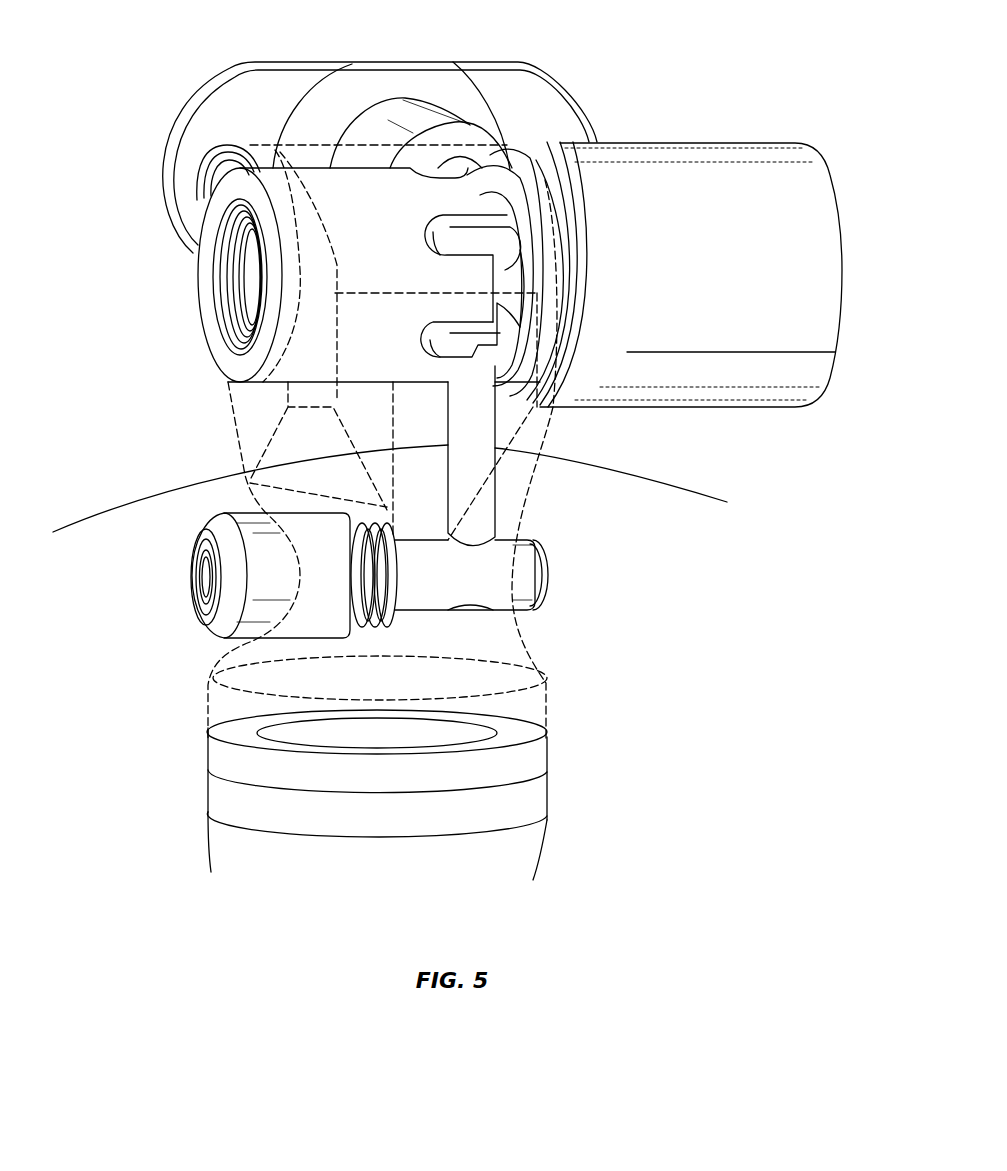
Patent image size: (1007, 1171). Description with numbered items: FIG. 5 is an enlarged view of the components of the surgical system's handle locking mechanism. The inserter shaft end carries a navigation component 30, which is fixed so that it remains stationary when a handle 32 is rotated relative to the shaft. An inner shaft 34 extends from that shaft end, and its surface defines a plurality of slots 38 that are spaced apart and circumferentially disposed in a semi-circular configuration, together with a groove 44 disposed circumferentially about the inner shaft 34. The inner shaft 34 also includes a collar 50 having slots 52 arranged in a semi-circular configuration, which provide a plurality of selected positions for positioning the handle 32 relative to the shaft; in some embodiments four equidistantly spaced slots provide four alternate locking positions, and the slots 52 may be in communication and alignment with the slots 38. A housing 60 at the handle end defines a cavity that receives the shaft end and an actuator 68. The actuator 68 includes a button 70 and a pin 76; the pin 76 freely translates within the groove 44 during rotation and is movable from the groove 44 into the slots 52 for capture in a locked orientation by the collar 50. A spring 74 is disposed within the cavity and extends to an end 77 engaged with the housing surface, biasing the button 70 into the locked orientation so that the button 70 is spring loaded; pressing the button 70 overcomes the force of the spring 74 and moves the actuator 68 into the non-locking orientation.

The navigation component 30 is at (158, 70).
The handle 32 is at (228, 853).
The inner shaft 34 is at (513, 215).
The slots 38 is at (512, 250).
The groove 44 is at (527, 280).
The collar 50 is at (313, 183).
The slots 52 is at (474, 216).
The housing 60 is at (208, 429).
The actuator 68 is at (175, 577).
The button 70 is at (213, 607).
The spring 74 is at (403, 610).
The pin 76 is at (495, 470).
The end 77 is at (497, 575).